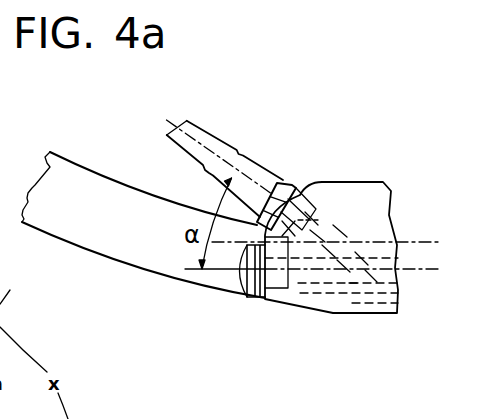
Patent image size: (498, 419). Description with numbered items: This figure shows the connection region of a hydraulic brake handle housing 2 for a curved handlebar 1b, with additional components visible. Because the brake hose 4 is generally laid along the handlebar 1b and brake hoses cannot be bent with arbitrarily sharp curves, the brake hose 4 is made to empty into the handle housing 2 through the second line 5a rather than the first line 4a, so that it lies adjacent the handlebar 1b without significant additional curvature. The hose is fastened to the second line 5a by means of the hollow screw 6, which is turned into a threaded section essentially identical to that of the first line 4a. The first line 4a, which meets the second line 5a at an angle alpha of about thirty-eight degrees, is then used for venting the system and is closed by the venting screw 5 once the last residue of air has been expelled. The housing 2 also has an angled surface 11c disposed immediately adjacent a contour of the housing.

The curved handlebar 1b is at (113, 247).
The handle housing 2 is at (340, 207).
The brake hose 4 is at (200, 142).
The first line 4a is at (352, 283).
The venting screw 5 is at (243, 275).
The second line 5a is at (353, 252).
The hollow screw 6 is at (295, 183).
The angled surface 11c is at (295, 237).